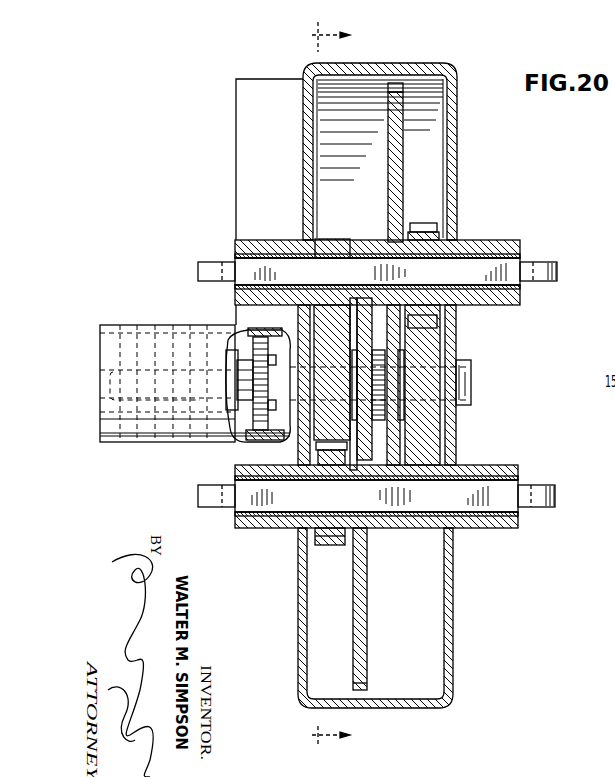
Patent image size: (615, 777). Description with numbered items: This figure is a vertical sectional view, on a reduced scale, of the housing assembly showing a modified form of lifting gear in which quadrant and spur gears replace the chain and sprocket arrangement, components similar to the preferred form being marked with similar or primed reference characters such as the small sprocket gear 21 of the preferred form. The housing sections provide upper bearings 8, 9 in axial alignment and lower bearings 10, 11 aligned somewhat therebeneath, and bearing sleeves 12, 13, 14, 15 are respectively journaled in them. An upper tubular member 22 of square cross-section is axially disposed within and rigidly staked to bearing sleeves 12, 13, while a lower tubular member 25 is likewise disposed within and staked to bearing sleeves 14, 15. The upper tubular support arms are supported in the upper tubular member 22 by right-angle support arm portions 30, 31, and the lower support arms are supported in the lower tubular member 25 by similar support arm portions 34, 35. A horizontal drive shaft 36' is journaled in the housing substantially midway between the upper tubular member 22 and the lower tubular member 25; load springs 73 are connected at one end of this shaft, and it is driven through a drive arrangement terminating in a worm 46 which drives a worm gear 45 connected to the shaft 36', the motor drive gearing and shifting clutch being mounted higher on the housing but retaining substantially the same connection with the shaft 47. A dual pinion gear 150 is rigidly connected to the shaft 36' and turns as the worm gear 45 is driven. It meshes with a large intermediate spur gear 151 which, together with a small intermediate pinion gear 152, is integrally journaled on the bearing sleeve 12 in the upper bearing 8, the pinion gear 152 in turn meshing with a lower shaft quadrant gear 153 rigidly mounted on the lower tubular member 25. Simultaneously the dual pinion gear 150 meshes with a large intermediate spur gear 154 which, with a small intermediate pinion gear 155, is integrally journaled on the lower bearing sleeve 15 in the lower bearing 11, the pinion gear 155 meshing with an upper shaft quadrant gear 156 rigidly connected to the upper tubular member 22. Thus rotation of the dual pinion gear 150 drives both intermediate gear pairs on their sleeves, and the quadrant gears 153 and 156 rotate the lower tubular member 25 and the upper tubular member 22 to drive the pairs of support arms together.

The upper bearing 8 is at (486, 244).
The upper bearing 9 is at (252, 240).
The lower bearing 10 is at (504, 467).
The lower bearing 11 is at (290, 525).
The bearing sleeve 12 is at (522, 256).
The bearing sleeve 13 is at (278, 240).
The bearing sleeve 14 is at (472, 467).
The bearing sleeve 15 is at (252, 523).
The small sprocket gear 21 is at (318, 385).
The upper tubular member 22 is at (512, 288).
The lower tubular member 25 is at (496, 520).
The support arm portion 30 is at (528, 282).
The support arm portion 31 is at (227, 266).
The support arm portion 34 is at (528, 508).
The support arm portion 35 is at (225, 492).
The horizontal drive shaft 36' is at (233, 385).
The worm gear 45 is at (262, 428).
The worm 46 is at (243, 361).
The shaft 47 is at (263, 341).
The load springs 73 is at (165, 322).
The dual pinion gear 150 is at (383, 354).
The large intermediate spur gear 151 is at (403, 162).
The small intermediate pinion gear 152 is at (420, 226).
The lower shaft quadrant gear 153 is at (447, 438).
The large intermediate spur gear 154 is at (368, 598).
The small intermediate pinion gear 155 is at (335, 548).
The upper shaft quadrant gear 156 is at (336, 240).